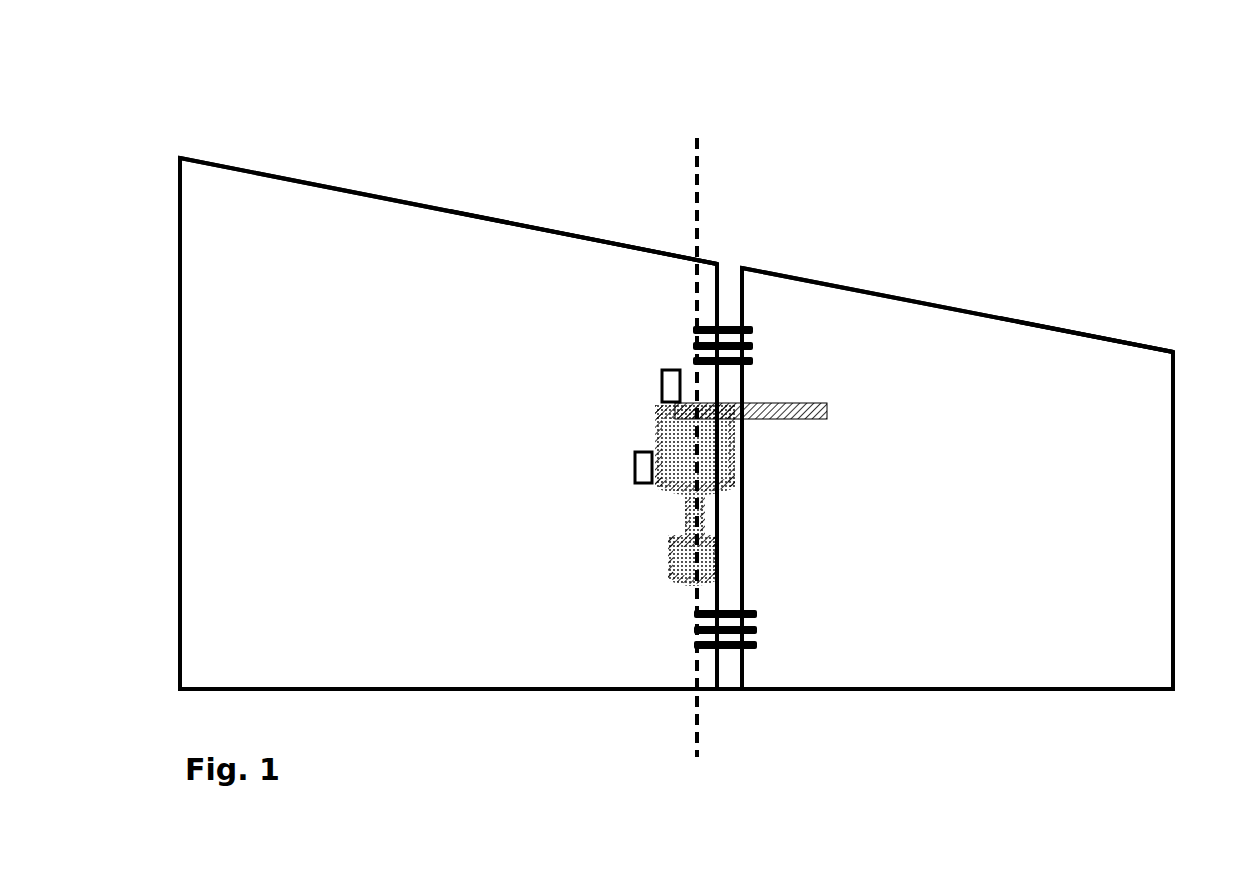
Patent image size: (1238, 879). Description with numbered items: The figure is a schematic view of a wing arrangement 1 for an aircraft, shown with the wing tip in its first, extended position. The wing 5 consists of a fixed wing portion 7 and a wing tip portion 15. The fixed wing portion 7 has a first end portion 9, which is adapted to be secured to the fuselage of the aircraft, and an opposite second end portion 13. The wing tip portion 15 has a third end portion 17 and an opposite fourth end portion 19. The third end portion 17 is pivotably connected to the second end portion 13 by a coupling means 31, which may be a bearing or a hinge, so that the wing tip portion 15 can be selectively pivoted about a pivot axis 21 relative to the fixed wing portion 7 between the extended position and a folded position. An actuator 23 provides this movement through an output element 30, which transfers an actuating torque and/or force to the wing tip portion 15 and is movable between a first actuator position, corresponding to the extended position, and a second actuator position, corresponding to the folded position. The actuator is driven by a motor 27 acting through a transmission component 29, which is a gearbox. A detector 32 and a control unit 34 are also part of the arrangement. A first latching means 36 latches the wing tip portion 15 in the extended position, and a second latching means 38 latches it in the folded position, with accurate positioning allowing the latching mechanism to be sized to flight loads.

The wing arrangement 1 is at (1112, 96).
The wing 5 is at (1115, 154).
The fixed wing portion 7 is at (379, 196).
The first end portion 9 is at (247, 153).
The second end portion 13 is at (532, 215).
The wing tip portion 15 is at (1033, 323).
The third end portion 17 is at (832, 270).
The fourth end portion 19 is at (1133, 333).
The pivot axis 21 is at (698, 146).
The actuator 23 is at (675, 610).
The motor 27 is at (673, 436).
The transmission component 29 is at (681, 564).
The output element 30 is at (822, 397).
The coupling means 31 is at (731, 260).
The detector 32 is at (662, 368).
The control unit 34 is at (633, 470).
The first latching means 36 is at (703, 653).
The second latching means 38 is at (705, 327).